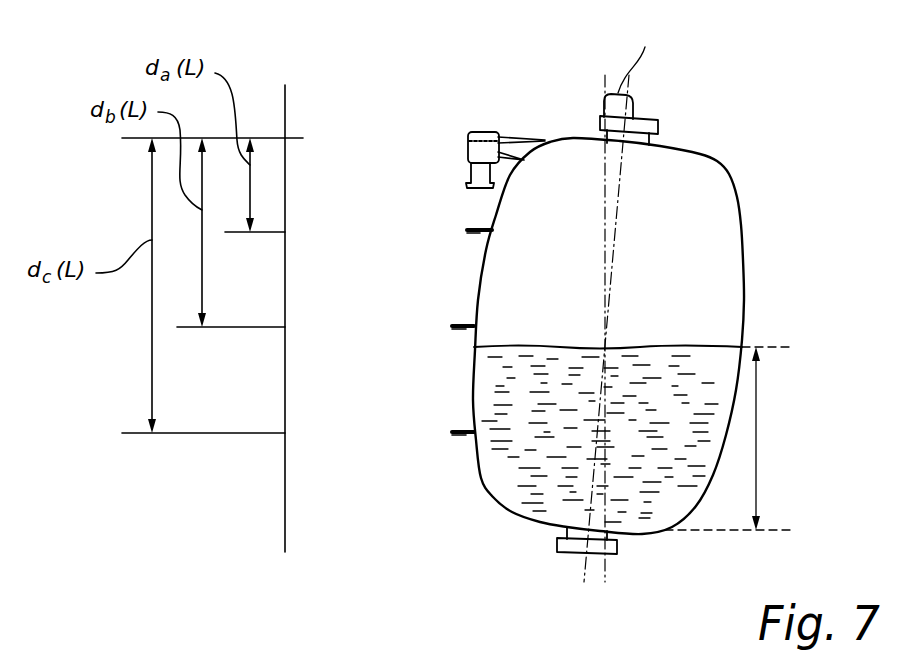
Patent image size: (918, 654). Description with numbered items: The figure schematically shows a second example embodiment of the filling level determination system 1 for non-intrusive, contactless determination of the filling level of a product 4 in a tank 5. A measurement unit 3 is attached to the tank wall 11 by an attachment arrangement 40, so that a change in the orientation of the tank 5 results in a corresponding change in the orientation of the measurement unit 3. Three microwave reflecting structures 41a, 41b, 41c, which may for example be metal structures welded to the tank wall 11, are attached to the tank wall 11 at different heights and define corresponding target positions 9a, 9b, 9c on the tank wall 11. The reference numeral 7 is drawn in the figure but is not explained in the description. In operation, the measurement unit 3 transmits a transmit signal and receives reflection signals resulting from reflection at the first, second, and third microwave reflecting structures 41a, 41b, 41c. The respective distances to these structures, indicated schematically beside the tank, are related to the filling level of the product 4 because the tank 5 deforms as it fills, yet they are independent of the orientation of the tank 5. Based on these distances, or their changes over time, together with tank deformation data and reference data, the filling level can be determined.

The filling level determination system 1 is at (463, 90).
The measurement unit 3 is at (483, 147).
The product 4 is at (608, 434).
The tank 5 is at (735, 152).
The sensor base 7 is at (470, 175).
The target position 9a is at (483, 229).
The target position 9b is at (463, 325).
The target position 9c is at (463, 431).
The tank wall 11 is at (500, 507).
The attachment arrangement 40 is at (525, 118).
The first microwave reflecting structure 41a is at (477, 233).
The second microwave reflecting structure 41b is at (456, 331).
The third microwave reflecting structure 41c is at (470, 437).